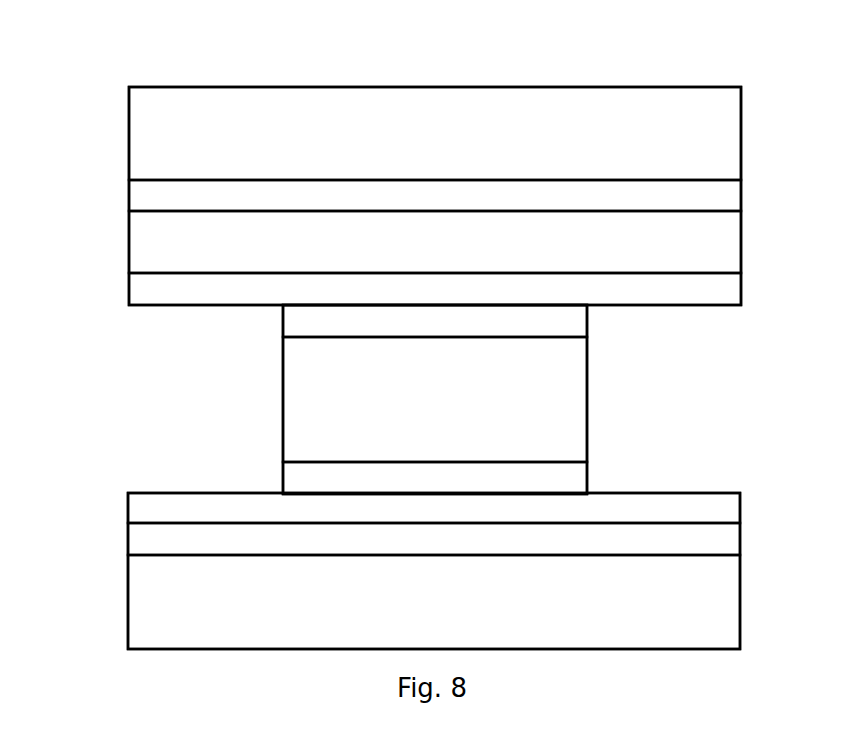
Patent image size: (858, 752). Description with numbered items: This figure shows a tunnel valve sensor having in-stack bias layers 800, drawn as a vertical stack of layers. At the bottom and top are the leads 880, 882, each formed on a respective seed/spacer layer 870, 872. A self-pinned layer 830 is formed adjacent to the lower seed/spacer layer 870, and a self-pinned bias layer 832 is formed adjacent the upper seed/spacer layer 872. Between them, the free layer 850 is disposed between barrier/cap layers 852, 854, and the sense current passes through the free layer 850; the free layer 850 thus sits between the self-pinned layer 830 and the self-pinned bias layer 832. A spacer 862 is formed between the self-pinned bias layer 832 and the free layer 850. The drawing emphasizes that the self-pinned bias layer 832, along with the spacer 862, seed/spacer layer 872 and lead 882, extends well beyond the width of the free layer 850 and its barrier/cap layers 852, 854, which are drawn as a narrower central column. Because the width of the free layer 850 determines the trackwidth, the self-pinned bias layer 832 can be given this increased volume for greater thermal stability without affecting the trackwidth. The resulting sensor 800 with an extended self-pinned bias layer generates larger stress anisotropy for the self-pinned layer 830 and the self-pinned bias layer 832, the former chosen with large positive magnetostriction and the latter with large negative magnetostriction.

The sensor having in-stack bias layers 800 is at (110, 60).
The lead 882 is at (741, 148).
The seed/spacer layer 872 is at (741, 195).
The self-pinned bias layer 832 is at (741, 243).
The spacer 862 is at (741, 293).
The barrier/cap layer 852 is at (580, 319).
The free layer 850 is at (580, 399).
The barrier/cap layer 854 is at (580, 468).
The self-pinned layer 830 is at (740, 508).
The seed/spacer layer 870 is at (740, 547).
The lead 880 is at (740, 602).